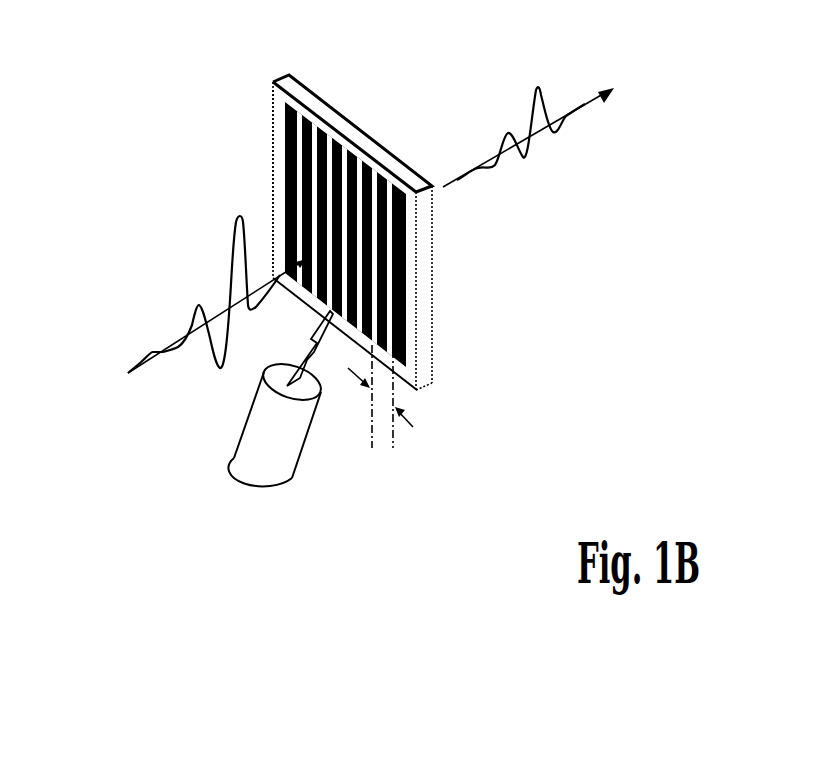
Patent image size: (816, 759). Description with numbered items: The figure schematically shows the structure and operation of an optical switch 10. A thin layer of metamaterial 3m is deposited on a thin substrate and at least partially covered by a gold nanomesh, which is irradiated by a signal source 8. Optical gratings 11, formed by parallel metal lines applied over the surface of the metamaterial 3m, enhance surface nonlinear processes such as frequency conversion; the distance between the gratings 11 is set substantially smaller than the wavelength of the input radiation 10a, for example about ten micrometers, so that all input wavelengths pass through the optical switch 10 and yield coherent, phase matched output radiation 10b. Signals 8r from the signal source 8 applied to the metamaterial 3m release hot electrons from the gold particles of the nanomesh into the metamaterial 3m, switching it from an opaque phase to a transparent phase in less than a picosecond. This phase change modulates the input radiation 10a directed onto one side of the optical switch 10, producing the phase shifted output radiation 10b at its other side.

The optical switch 10 is at (238, 117).
The metamaterial 3m is at (273, 165).
The input radiation 10a is at (178, 242).
The output radiation 10b is at (562, 152).
The optical gratings 11 is at (397, 230).
The signal source 8 is at (283, 450).
The signals 8r is at (309, 345).